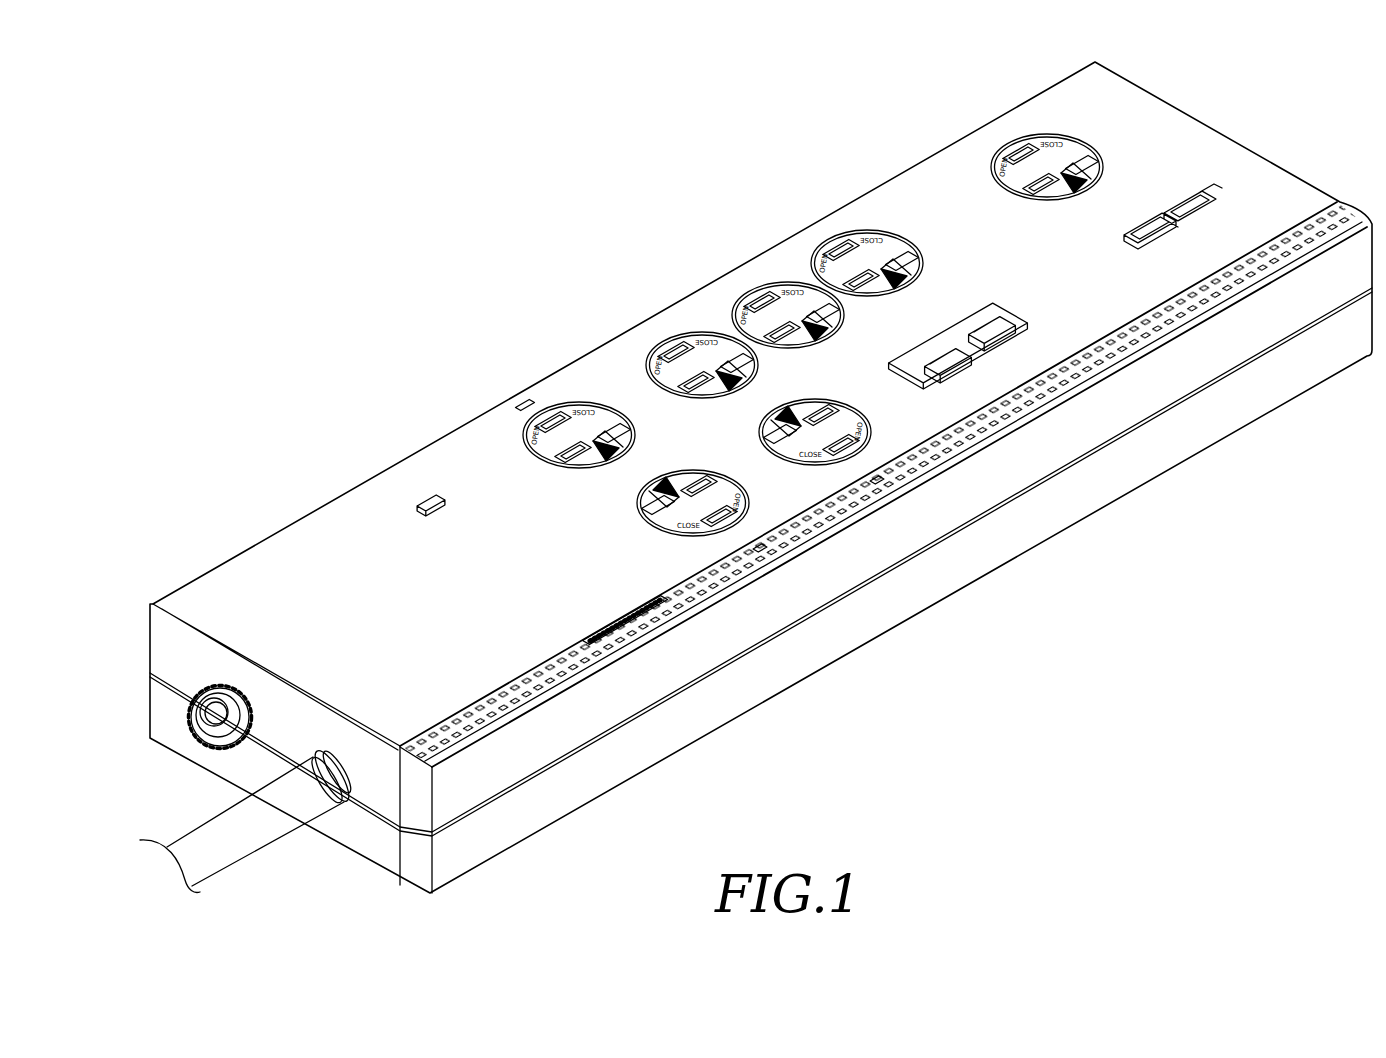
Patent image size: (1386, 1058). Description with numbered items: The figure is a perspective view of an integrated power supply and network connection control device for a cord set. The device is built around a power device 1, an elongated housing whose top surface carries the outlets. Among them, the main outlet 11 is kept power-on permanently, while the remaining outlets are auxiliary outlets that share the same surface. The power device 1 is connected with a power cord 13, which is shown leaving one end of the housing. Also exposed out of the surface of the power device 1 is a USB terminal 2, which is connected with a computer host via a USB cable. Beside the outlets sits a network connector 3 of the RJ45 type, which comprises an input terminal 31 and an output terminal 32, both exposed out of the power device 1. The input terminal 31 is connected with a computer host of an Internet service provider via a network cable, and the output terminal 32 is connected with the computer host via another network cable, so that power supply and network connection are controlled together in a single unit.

The power device 1 is at (1201, 119).
The main outlet 11 is at (1047, 160).
The power cord 13 is at (217, 843).
The USB terminal 2 is at (424, 494).
The network connector 3 is at (1093, 464).
The input terminal 31 is at (947, 360).
The output terminal 32 is at (993, 332).